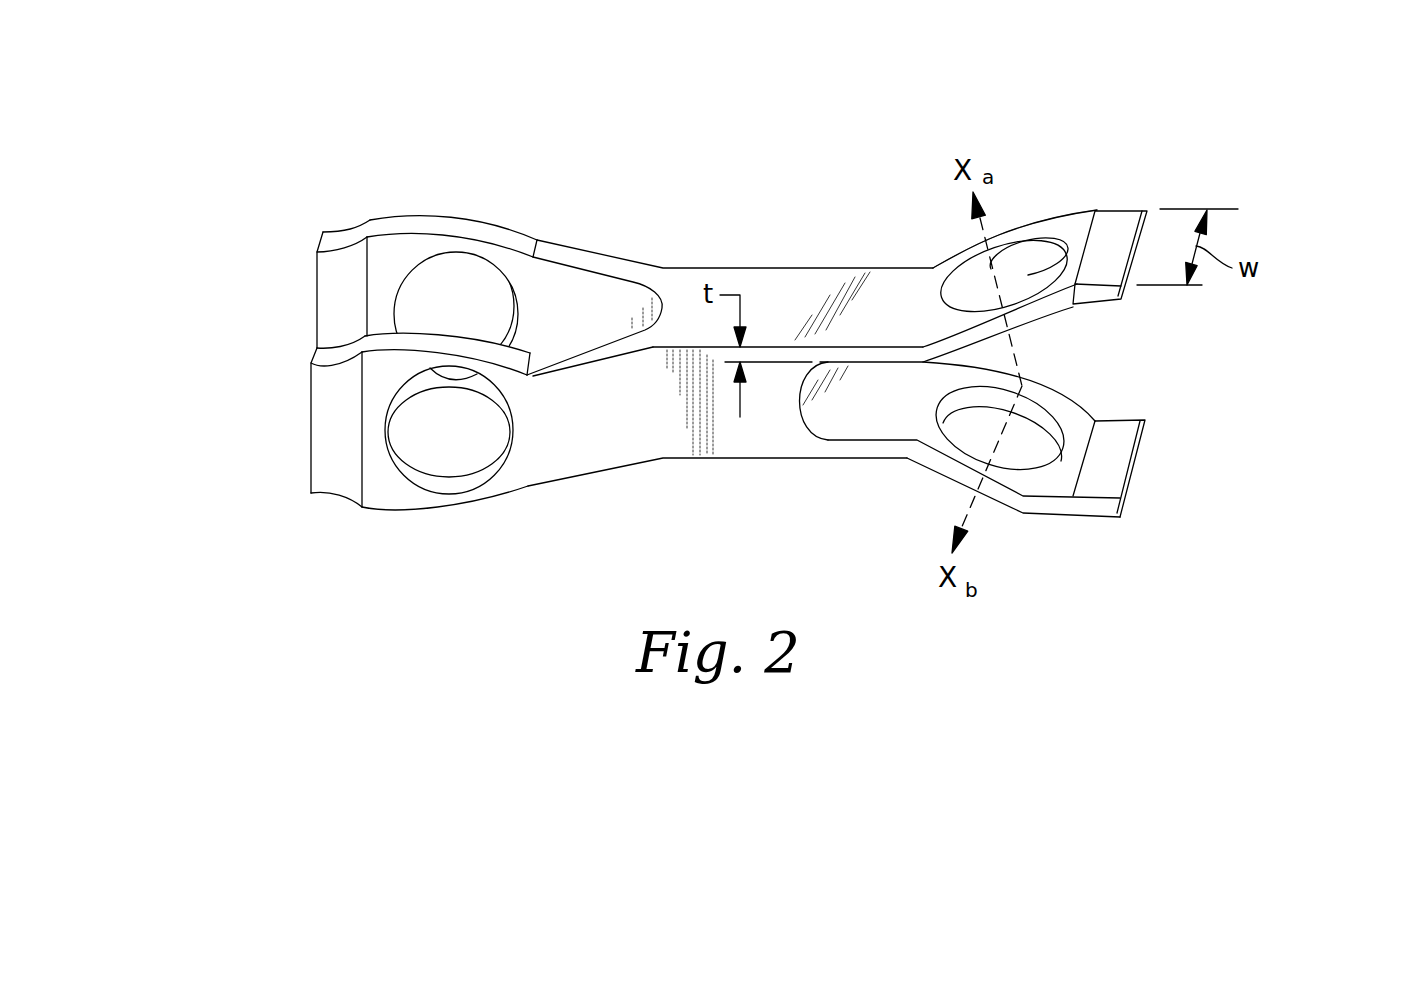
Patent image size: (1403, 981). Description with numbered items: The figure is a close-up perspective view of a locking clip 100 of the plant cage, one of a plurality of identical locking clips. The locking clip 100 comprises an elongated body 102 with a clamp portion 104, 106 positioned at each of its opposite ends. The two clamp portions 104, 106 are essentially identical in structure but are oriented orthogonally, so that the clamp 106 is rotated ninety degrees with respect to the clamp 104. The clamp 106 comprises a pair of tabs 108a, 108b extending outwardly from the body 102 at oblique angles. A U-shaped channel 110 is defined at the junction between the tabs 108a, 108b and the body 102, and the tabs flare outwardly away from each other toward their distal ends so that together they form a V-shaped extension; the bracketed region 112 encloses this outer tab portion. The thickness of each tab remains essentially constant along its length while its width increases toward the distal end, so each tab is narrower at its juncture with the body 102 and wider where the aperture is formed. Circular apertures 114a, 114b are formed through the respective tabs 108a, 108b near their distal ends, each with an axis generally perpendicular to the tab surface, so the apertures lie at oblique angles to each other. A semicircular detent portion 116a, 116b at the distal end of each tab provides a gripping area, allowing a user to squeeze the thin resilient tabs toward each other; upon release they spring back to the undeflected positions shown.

The locking clip 100 is at (664, 118).
The elongated body 102 is at (778, 290).
The clamp portion 104 is at (290, 218).
The clamp portion 106 is at (1265, 219).
The tab 108a is at (977, 250).
The tab 108b is at (995, 477).
The U-shaped channel 110 is at (820, 417).
The tab region 112 is at (783, 153).
The circular aperture 114a is at (1027, 273).
The circular aperture 114b is at (1027, 442).
The semicircular detent portion 116a is at (1117, 227).
The semicircular detent portion 116b is at (1120, 458).